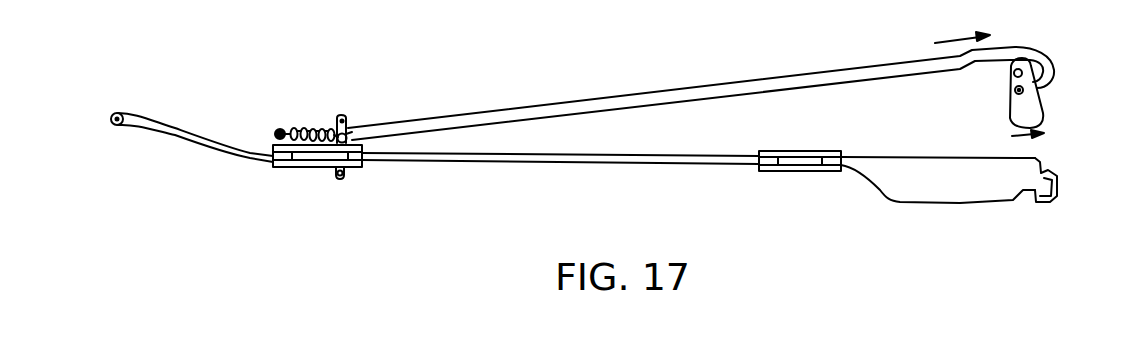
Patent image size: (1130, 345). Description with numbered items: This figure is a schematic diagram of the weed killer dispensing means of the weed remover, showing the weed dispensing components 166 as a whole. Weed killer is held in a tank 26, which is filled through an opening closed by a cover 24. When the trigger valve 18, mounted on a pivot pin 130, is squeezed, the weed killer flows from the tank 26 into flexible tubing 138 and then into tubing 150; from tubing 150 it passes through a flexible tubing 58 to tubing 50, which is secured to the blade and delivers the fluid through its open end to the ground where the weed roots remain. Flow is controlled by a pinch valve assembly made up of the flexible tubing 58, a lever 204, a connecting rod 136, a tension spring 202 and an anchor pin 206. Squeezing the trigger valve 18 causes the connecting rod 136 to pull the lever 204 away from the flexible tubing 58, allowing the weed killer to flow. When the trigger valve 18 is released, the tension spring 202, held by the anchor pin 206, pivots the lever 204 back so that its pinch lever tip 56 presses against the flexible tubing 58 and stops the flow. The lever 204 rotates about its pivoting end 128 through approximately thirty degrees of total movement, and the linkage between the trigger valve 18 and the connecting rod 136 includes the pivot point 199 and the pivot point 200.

The trigger valve 18 is at (1033, 110).
The cover 24 is at (1057, 188).
The tank 26 is at (945, 197).
The tubing 50 is at (172, 130).
The pinch lever tip 56 is at (346, 174).
The flexible tubing 58 is at (307, 168).
The pivoting end of lever 128 is at (343, 114).
The pivot pin 130 is at (1013, 72).
The connecting rod 136 is at (627, 102).
The flexible tubing 138 is at (808, 171).
The tubing 150 is at (632, 164).
The weed dispensing components 166 is at (318, 40).
The pivot point 199 is at (1014, 92).
The pivot point 200 is at (350, 135).
The tension spring 202 is at (313, 128).
The lever 204 is at (333, 168).
The anchor pin 206 is at (274, 132).